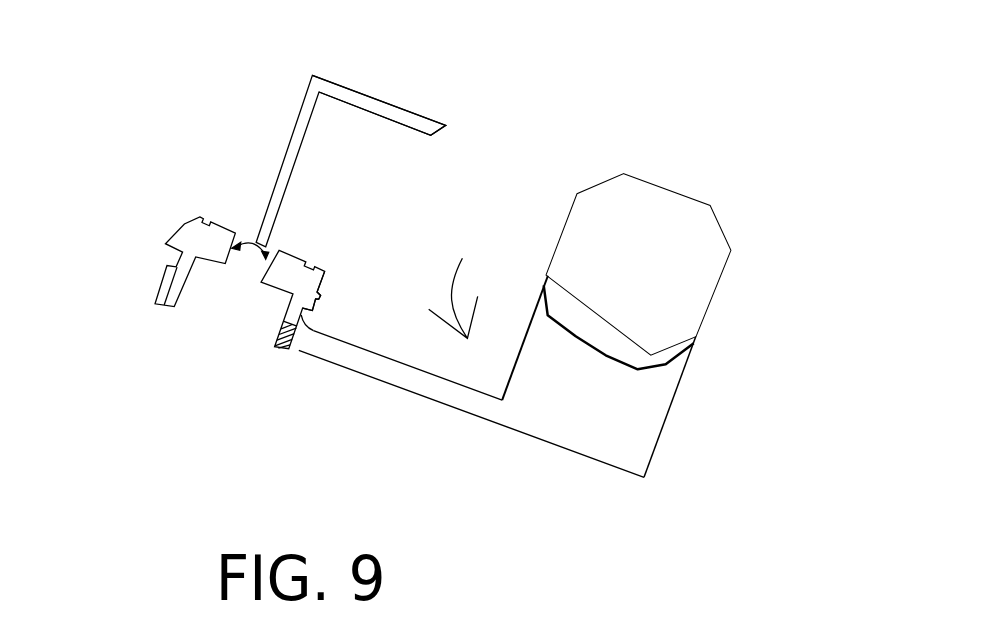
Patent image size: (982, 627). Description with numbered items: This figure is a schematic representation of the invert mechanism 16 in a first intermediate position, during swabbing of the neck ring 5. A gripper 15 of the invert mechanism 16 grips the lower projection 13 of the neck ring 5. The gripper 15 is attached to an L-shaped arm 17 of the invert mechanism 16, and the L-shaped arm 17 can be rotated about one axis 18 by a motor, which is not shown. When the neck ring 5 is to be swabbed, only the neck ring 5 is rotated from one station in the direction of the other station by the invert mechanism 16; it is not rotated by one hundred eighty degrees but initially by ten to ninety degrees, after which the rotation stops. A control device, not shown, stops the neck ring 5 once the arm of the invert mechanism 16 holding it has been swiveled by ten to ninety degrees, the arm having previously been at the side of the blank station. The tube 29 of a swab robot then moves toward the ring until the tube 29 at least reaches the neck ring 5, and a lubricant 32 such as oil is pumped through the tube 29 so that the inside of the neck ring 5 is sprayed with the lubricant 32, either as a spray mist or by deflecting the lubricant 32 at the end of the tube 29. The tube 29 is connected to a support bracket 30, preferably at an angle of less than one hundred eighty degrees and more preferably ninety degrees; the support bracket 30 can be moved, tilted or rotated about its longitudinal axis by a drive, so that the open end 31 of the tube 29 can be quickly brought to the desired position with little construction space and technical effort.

The neck ring 5 is at (312, 309).
The lower projection 13 is at (292, 337).
The gripper 15 is at (293, 353).
The invert mechanism 16 is at (463, 268).
The L-shaped arm 17 is at (453, 397).
The axis 18 is at (698, 290).
The tube 29 is at (292, 165).
The support bracket 30 is at (380, 98).
The open end 31 is at (252, 233).
The lubricant 32 is at (245, 247).